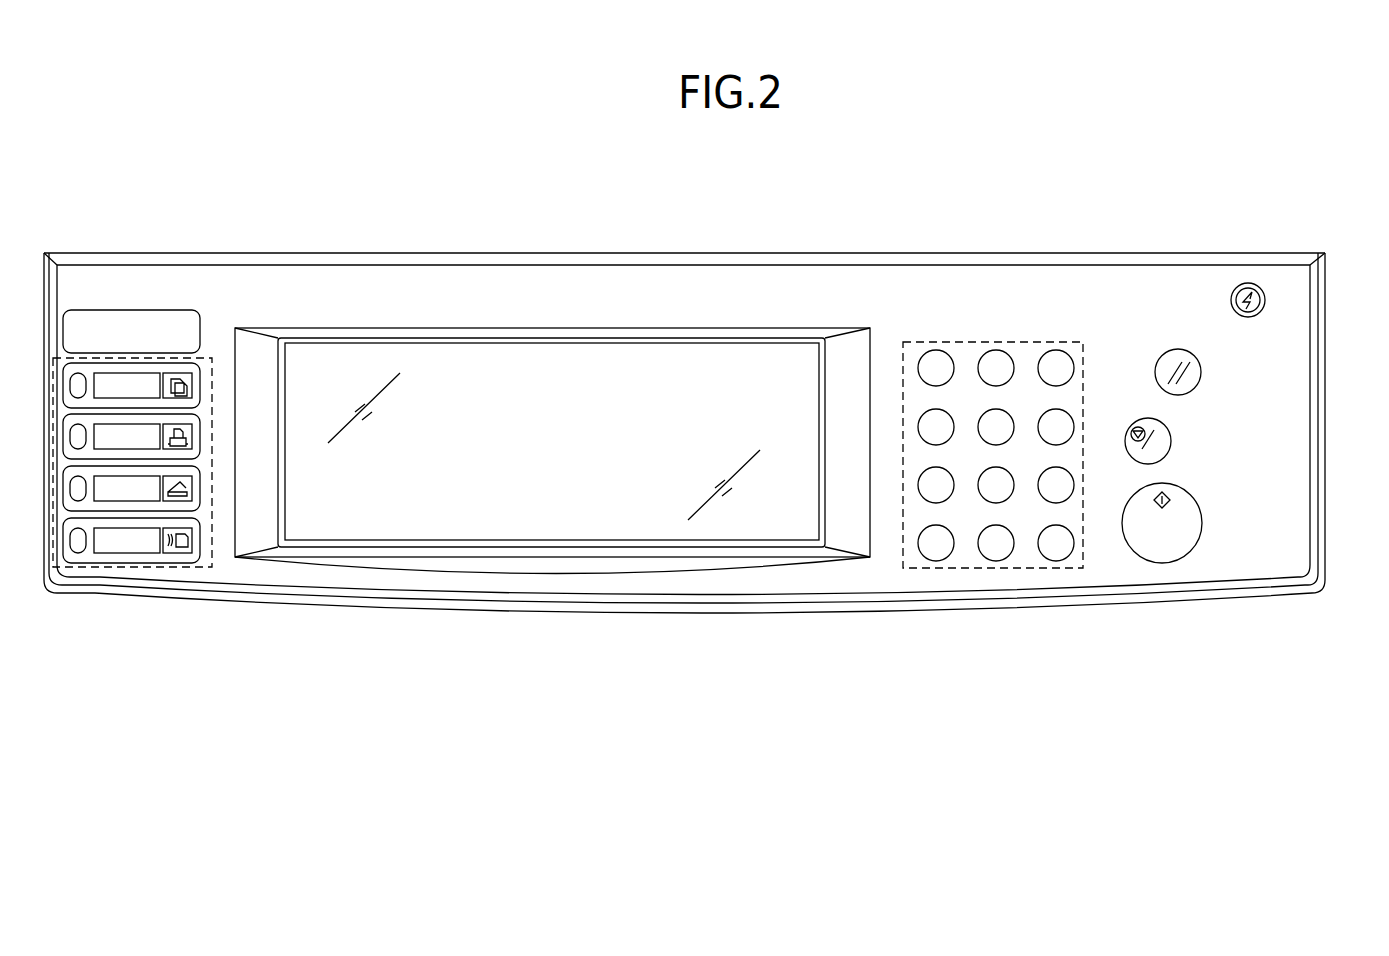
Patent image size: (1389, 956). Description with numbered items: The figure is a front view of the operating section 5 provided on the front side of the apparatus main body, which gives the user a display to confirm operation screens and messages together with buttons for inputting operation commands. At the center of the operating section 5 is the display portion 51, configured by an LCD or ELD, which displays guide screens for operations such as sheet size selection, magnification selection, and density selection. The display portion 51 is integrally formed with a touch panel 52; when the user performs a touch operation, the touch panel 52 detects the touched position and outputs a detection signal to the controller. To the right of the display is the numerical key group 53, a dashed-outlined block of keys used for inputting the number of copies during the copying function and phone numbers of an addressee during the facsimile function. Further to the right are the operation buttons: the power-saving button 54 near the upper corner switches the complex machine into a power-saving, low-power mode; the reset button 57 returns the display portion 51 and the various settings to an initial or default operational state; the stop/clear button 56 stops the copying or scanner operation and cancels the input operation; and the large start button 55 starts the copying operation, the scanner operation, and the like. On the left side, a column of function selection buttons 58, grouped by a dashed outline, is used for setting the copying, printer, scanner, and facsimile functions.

The operating section 5 is at (870, 253).
The display portion 51 is at (552, 506).
The touch panel 52 is at (514, 506).
The numerical key group 53 is at (993, 571).
The power-saving button 54 is at (1265, 299).
The start button 55 is at (1203, 515).
The stop/clear button 56 is at (1165, 455).
The reset button 57 is at (1201, 368).
The function selection buttons 58 is at (138, 570).